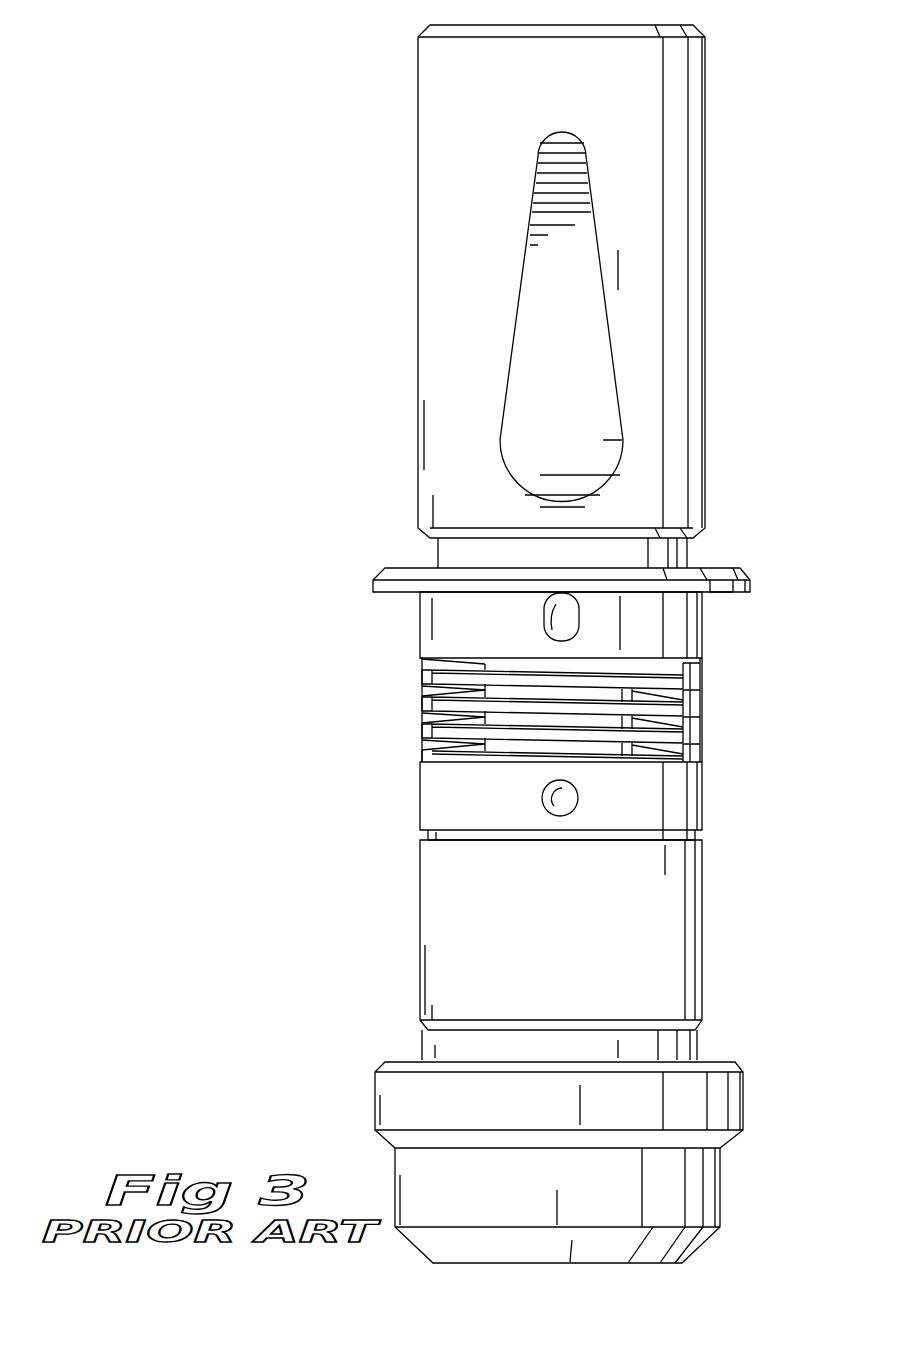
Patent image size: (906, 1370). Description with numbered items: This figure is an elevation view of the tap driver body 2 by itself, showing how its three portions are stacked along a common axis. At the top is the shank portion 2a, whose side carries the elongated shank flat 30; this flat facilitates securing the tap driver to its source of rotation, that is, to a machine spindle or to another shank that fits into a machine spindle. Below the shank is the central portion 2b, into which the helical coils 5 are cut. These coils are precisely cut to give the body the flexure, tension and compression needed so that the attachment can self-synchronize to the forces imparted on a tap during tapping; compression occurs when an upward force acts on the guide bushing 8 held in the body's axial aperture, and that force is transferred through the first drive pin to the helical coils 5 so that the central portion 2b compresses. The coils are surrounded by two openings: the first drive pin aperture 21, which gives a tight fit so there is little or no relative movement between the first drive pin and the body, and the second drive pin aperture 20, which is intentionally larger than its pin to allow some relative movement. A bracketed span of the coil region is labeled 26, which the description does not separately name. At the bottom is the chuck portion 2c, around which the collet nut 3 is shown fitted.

The tap driver body 2 is at (338, 222).
The shank portion 2a is at (678, 165).
The central portion 2b is at (345, 590).
The chuck portion 2c is at (450, 973).
The collet nut 3 is at (725, 1106).
The helical coils 5 is at (430, 722).
The guide bushing 8 is at (510, 668).
The second drive pin aperture 20 is at (568, 619).
The first drive pin aperture 21 is at (548, 793).
The spring section 26 is at (716, 658).
The shank flat 30 is at (555, 368).